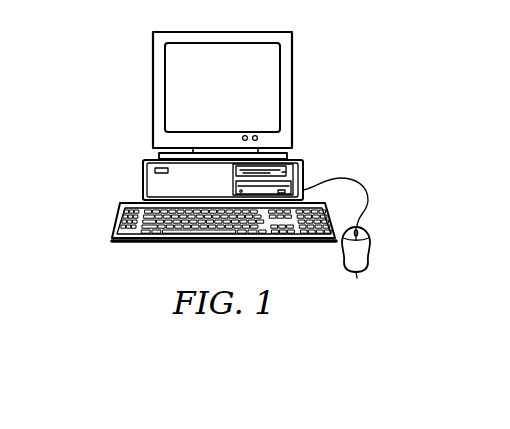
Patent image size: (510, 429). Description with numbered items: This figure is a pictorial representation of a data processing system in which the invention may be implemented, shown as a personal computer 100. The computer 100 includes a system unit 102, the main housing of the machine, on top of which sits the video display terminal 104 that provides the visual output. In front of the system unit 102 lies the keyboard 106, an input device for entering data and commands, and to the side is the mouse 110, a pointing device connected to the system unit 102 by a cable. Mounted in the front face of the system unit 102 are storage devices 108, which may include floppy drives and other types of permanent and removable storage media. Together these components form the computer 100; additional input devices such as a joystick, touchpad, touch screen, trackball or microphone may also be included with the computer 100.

The computer 100 is at (96, 80).
The system unit 102 is at (143, 178).
The video display terminal 104 is at (292, 88).
The keyboard 106 is at (135, 243).
The storage devices 108 is at (275, 169).
The mouse 110 is at (357, 278).